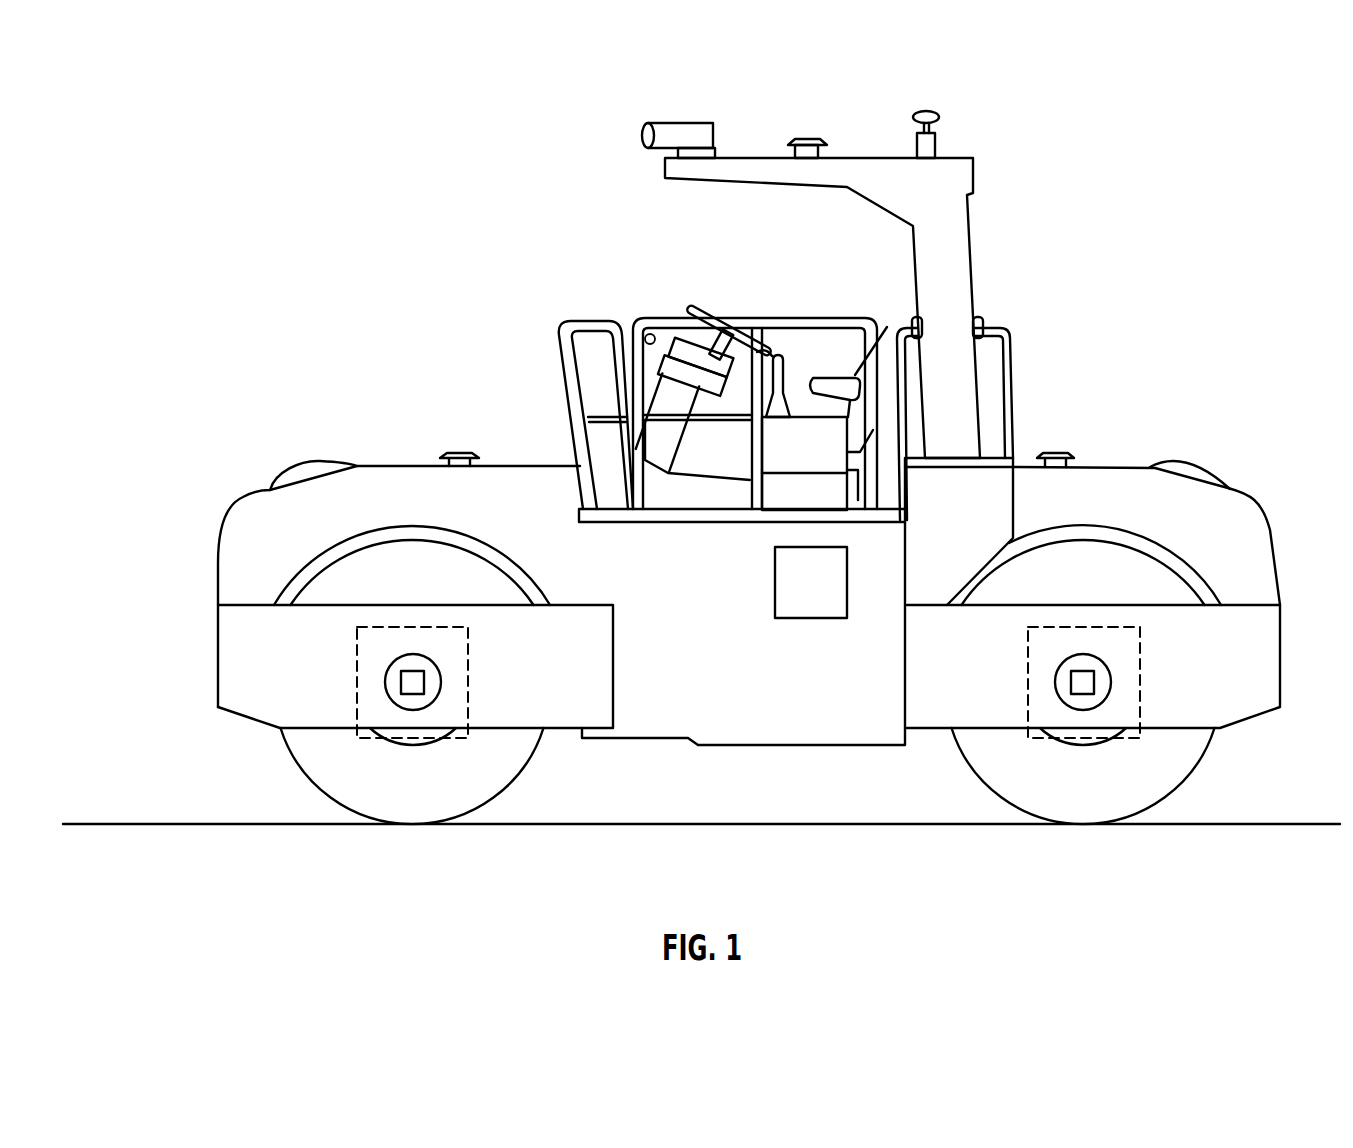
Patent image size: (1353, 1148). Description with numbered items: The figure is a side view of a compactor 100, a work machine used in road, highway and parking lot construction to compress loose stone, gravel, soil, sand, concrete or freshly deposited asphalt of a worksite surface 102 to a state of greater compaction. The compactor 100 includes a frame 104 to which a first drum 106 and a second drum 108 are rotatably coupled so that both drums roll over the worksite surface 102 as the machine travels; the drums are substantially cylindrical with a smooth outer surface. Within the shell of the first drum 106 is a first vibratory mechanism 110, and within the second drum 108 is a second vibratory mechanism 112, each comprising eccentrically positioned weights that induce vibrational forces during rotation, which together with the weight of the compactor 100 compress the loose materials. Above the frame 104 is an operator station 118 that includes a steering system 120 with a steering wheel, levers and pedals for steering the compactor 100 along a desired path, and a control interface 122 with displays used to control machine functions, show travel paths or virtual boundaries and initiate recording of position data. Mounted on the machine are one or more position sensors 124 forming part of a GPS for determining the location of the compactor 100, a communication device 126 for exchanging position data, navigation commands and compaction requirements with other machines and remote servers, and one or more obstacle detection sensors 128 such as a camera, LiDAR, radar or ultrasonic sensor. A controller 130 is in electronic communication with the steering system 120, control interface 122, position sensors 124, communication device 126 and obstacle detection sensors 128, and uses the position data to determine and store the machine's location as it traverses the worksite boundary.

The compactor 100 is at (1041, 156).
The worksite surface 102 is at (133, 823).
The frame 104 is at (1243, 508).
The first drum 106 is at (413, 807).
The second drum 108 is at (1085, 807).
The first vibratory mechanism 110 is at (357, 677).
The second vibratory mechanism 112 is at (1140, 697).
The operator station 118 is at (539, 156).
The steering system 120 is at (780, 288).
The control interface 122 is at (685, 330).
The position sensors 124 is at (808, 140).
The communication device 126 is at (927, 112).
The obstacle detection sensors 128 is at (680, 122).
The controller 130 is at (773, 583).